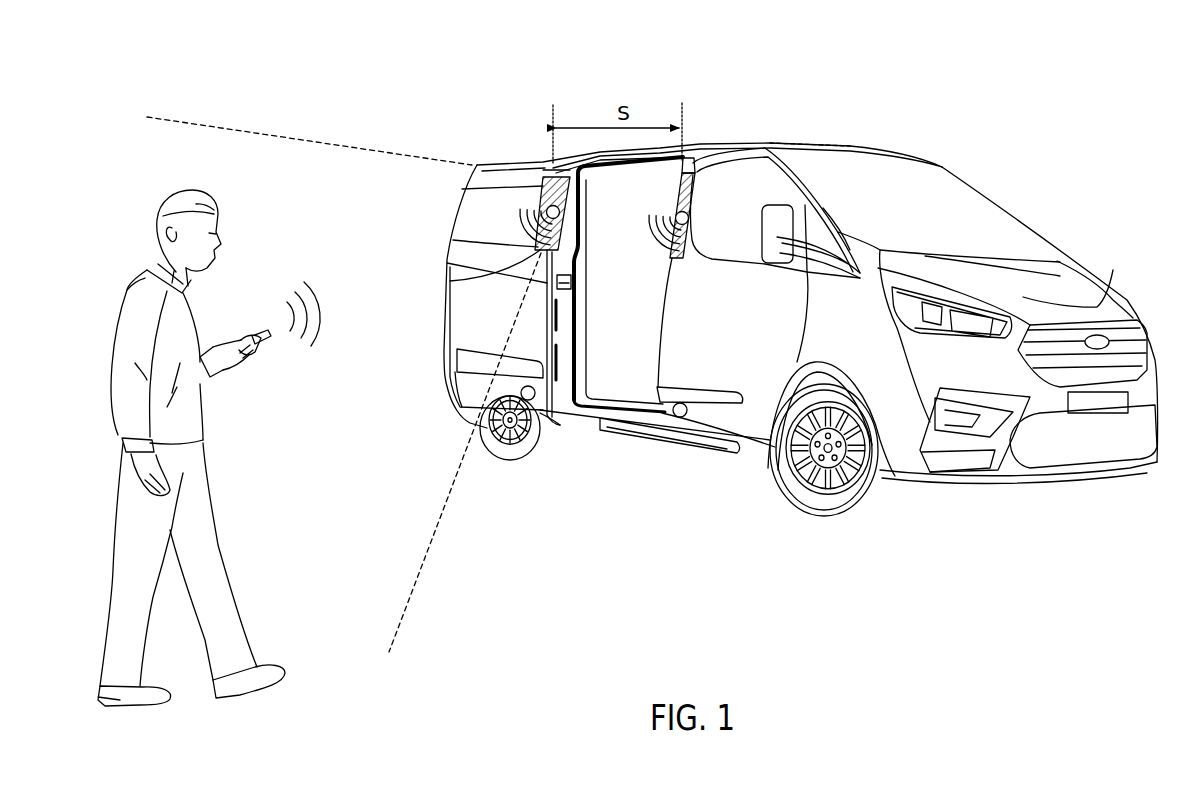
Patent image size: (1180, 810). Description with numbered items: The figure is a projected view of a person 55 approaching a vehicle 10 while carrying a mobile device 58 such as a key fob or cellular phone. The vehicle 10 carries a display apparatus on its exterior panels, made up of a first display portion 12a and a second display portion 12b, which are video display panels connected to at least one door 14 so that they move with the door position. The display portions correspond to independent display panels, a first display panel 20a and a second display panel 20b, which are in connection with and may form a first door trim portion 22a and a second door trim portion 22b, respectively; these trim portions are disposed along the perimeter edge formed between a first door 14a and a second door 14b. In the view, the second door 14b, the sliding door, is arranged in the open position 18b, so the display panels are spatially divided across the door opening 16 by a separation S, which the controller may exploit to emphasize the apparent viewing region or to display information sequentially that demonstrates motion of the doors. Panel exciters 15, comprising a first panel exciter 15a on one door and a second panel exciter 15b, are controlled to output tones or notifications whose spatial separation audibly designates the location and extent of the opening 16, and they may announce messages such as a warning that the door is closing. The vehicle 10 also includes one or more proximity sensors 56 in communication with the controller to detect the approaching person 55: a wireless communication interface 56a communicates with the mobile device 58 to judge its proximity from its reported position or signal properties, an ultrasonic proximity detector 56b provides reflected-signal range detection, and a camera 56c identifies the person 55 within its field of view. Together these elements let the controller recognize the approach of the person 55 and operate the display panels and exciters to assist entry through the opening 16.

The vehicle 10 is at (1090, 114).
The first display portion 12a is at (759, 281).
The second display portion 12b is at (455, 296).
The door 14 is at (557, 444).
The first door 14a is at (727, 418).
The second door 14b is at (490, 340).
The panel exciters 15 is at (583, 250).
The first panel exciter 15a is at (690, 240).
The second panel exciter 15b is at (546, 208).
The opening 16 is at (641, 297).
The open position 18b is at (757, 67).
The first display panel 20a is at (663, 270).
The second display panel 20b is at (547, 283).
The first door trim portion 22a is at (694, 164).
The second door trim portion 22b is at (547, 165).
The person 55 is at (143, 296).
The proximity sensor 56 is at (691, 313).
The wireless communication interface 56a is at (832, 146).
The ultrasonic proximity detector 56b is at (547, 418).
The camera 56c is at (545, 182).
The mobile device 58 is at (262, 330).